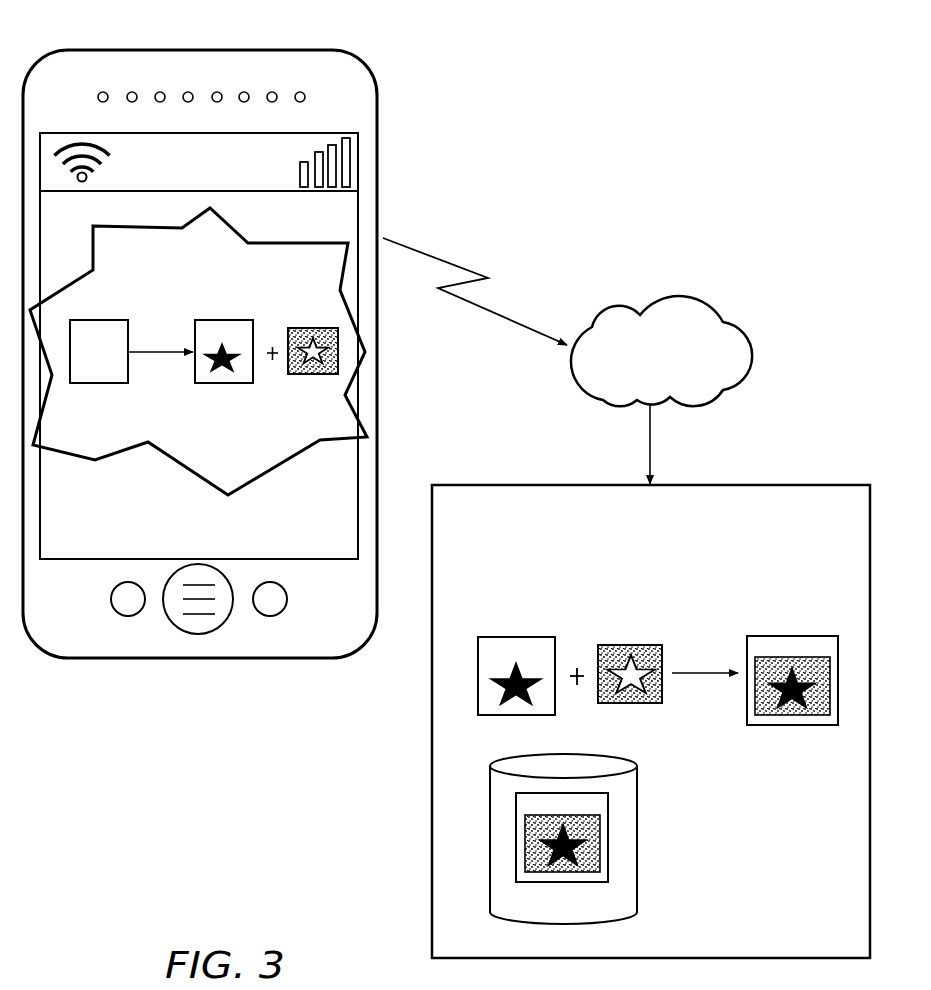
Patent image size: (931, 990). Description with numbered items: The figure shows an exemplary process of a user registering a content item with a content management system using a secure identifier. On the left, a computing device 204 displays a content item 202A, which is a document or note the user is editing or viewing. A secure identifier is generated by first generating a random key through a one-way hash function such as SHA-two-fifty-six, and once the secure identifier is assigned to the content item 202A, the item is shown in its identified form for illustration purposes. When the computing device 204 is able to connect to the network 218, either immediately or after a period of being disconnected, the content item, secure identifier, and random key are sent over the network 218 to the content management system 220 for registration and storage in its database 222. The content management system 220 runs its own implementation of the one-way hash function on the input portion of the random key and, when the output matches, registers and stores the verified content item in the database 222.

The computing device 204 is at (198, 48).
The content item 202A is at (100, 383).
The network 218 is at (679, 386).
The content management system 220 is at (677, 565).
The database 222 is at (580, 912).